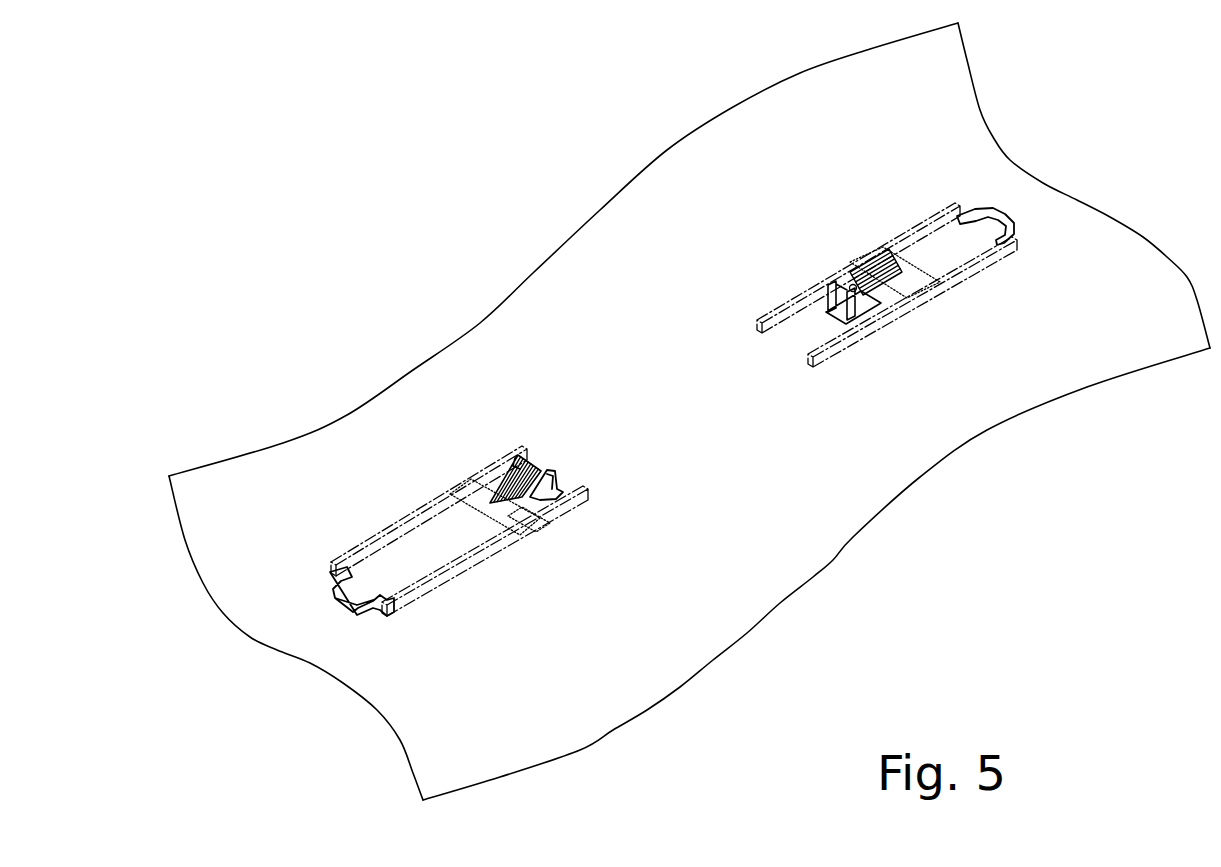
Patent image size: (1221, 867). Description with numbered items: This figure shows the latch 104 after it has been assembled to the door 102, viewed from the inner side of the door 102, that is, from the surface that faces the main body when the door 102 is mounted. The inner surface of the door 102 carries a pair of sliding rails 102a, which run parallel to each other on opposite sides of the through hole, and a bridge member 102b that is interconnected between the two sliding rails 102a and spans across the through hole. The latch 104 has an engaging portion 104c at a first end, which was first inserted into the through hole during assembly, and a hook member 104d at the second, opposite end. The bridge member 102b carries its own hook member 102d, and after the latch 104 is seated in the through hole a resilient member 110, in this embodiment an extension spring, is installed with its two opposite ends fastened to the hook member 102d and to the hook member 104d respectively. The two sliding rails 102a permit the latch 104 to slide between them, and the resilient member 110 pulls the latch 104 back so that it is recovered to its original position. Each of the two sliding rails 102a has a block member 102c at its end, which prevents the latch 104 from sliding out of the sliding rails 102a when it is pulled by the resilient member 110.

The door 102 is at (705, 262).
The sliding rails 102a is at (338, 576).
The bridge member 102b is at (520, 513).
The block member 102c is at (387, 607).
The hook member 102d is at (477, 490).
The latch 104 is at (400, 557).
The engaging portion 104c is at (360, 583).
The hook member 104d is at (543, 463).
The resilient member 110 is at (507, 483).